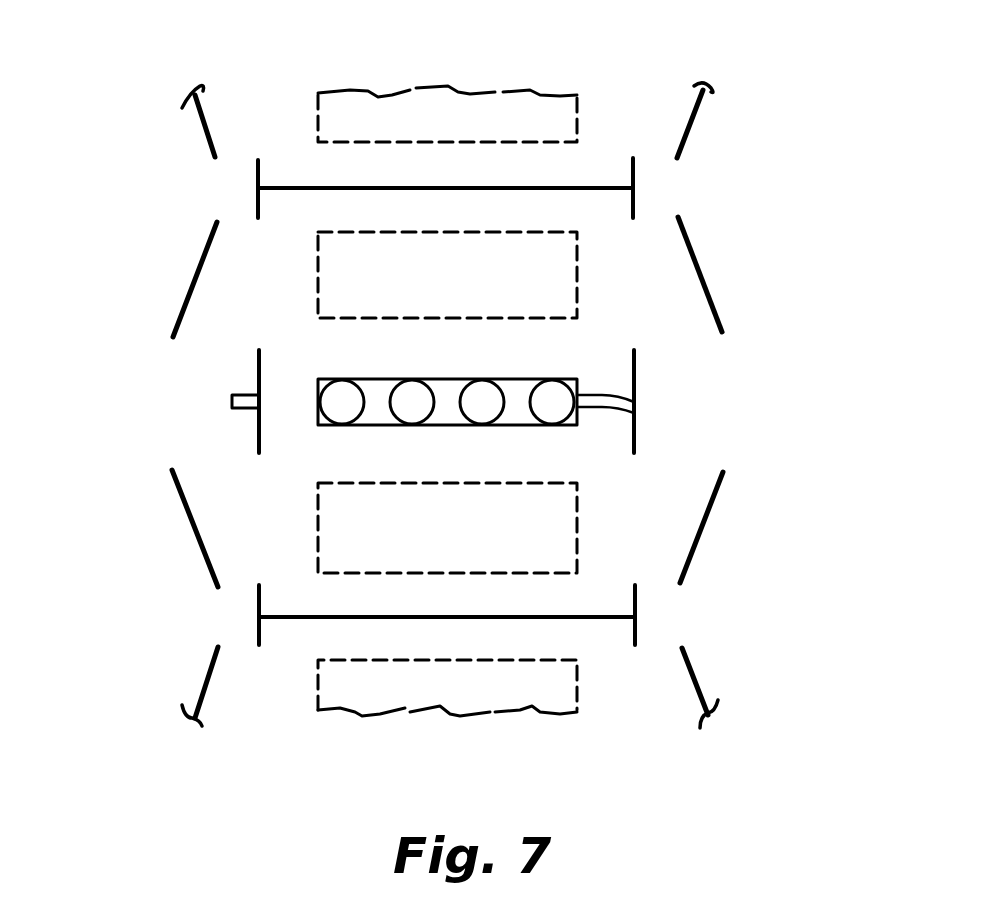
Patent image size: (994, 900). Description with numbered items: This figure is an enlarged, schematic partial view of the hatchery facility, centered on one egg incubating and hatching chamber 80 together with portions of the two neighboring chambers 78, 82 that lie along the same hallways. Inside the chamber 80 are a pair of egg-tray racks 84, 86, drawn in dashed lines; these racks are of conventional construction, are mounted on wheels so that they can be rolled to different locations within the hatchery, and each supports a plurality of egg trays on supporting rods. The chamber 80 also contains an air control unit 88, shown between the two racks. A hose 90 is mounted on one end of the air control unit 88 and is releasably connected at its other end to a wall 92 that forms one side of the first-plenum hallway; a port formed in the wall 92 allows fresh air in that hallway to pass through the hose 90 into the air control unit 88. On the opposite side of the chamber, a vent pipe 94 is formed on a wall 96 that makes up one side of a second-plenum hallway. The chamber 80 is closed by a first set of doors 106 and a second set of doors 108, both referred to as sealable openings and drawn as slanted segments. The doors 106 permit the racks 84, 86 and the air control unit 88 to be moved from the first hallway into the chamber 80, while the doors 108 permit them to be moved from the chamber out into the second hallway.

The egg incubating and hatching chamber 78 is at (572, 177).
The egg incubating and hatching chamber 80 is at (573, 203).
The egg incubating and hatching chamber 82 is at (577, 638).
The egg-tray rack 84 is at (577, 257).
The egg-tray rack 86 is at (577, 530).
The air control unit 88 is at (523, 378).
The hose 90 is at (612, 412).
The wall 92 is at (634, 425).
The vent pipe 94 is at (240, 395).
The wall 96 is at (259, 443).
The first set of doors 106 is at (702, 565).
The second set of doors 108 is at (173, 298).